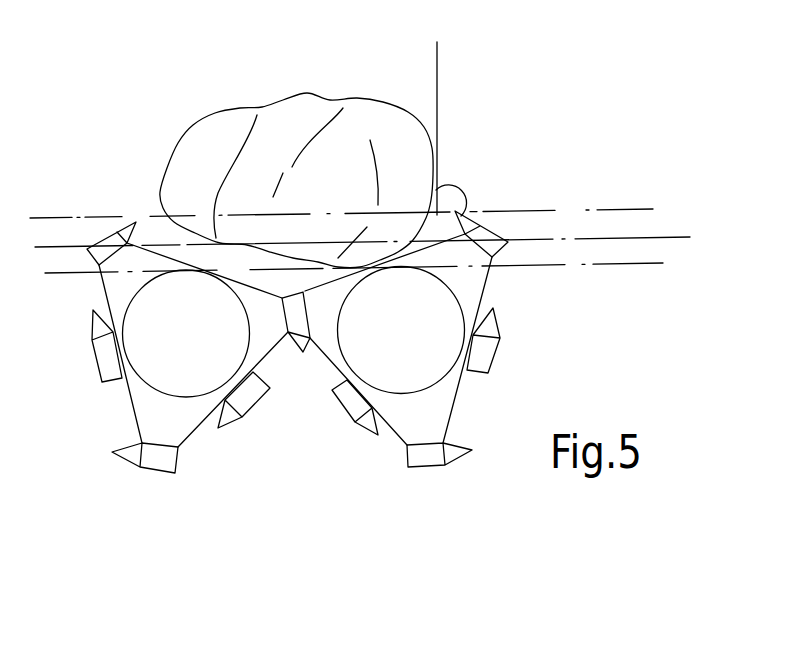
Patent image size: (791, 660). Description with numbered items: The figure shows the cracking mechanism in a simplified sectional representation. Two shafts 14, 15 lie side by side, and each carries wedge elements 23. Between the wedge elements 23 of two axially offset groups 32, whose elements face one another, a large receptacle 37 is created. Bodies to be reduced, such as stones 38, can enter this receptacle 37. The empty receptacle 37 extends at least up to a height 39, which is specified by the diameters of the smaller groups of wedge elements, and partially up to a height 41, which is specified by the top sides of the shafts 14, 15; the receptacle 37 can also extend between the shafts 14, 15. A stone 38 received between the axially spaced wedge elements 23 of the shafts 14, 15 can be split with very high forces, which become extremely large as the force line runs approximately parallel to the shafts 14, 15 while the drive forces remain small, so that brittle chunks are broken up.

The shaft 14 is at (202, 325).
The shaft 15 is at (420, 317).
The wedge element 23 is at (124, 220).
The group 32 is at (97, 205).
The receptacle 37 is at (337, 236).
The stone 38 is at (363, 118).
The height 39 is at (663, 237).
The height 41 is at (650, 263).